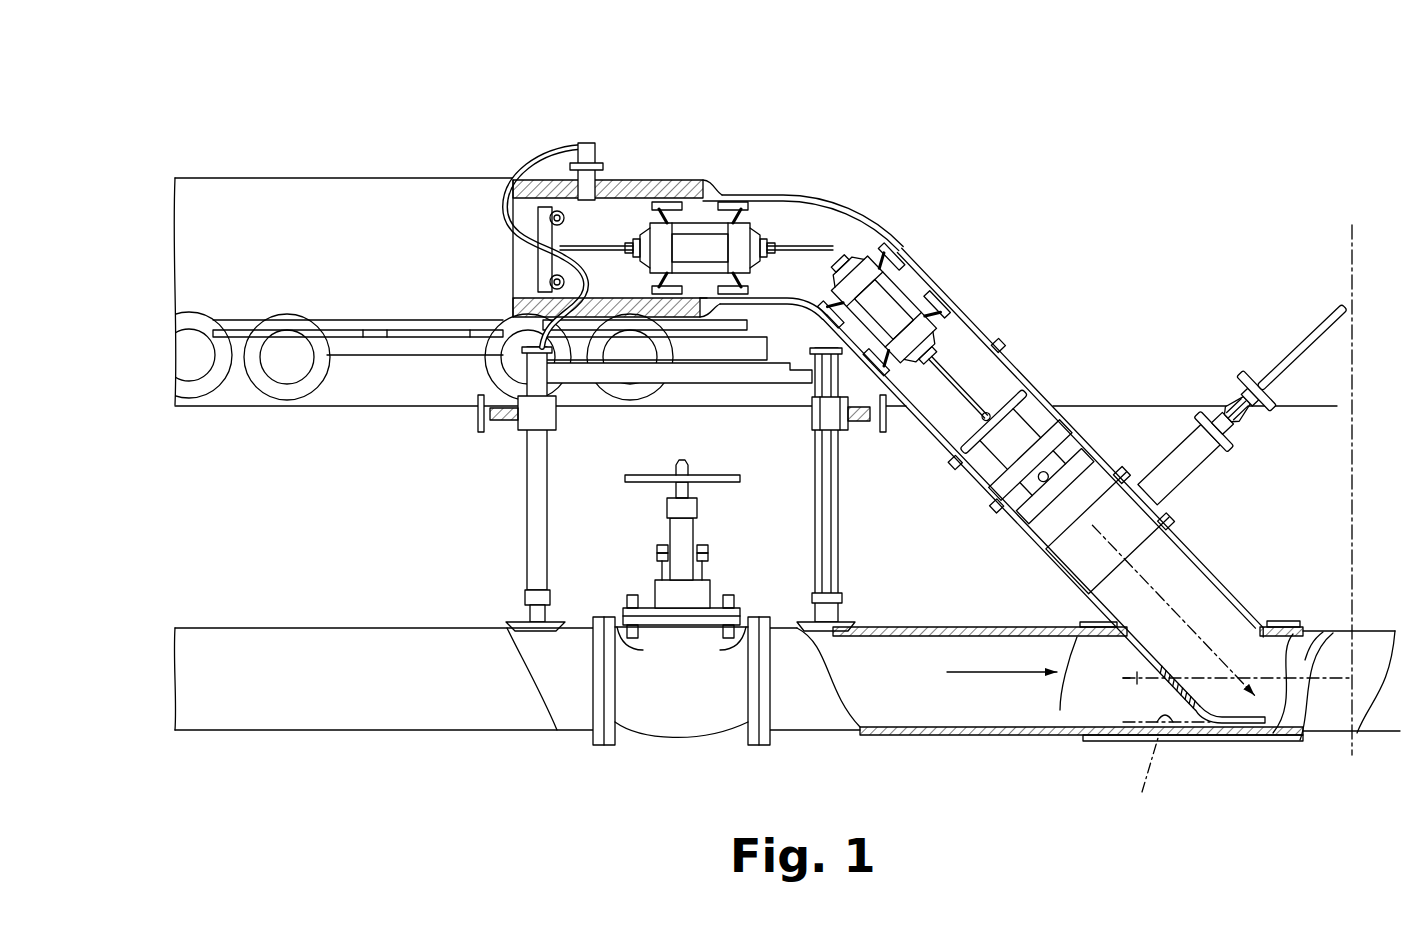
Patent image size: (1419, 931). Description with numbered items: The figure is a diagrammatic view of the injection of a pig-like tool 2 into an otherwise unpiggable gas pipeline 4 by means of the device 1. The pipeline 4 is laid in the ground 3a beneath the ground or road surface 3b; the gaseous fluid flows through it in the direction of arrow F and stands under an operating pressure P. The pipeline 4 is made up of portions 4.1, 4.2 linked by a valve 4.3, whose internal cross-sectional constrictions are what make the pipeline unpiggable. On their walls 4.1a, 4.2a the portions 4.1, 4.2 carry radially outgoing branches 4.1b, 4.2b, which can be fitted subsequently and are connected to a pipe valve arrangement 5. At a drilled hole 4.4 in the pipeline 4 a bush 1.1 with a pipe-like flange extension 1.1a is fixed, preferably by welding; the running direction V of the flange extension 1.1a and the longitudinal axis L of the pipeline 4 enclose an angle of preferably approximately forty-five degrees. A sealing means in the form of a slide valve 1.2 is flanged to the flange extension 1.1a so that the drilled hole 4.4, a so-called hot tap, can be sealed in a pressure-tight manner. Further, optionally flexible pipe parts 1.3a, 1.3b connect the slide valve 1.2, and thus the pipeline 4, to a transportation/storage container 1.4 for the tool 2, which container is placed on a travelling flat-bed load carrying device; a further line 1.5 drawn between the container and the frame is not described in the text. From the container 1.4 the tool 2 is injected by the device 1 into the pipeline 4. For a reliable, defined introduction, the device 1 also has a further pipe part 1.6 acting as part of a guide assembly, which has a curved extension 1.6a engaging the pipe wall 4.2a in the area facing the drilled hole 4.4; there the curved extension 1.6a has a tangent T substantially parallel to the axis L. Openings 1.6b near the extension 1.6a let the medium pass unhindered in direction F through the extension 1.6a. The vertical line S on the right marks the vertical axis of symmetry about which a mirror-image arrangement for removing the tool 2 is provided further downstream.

The device 1 is at (925, 157).
The bush 1.1 is at (1232, 577).
The flange extension 1.1a is at (1180, 535).
The slide valve 1.2 is at (1168, 460).
The pipe part 1.3a is at (1040, 394).
The pipe part 1.3b is at (800, 195).
The transportation/storage container 1.4 is at (476, 160).
The supply hose 1.5 is at (395, 375).
The pipe part 1.6 is at (1245, 730).
The curved extension 1.6a is at (1250, 700).
The openings 1.6b is at (1197, 722).
The tool 2 is at (958, 362).
The ground 3a is at (363, 557).
The ground or road surface 3b is at (313, 410).
The pipeline 4 is at (915, 737).
The portion 4.1 is at (410, 735).
The wall 4.1a is at (573, 665).
The branch 4.1b is at (520, 612).
The portion 4.2 is at (1322, 735).
The wall 4.2a is at (1077, 640).
The branch 4.2b is at (830, 640).
The valve 4.3 is at (690, 740).
The drilled hole 4.4 is at (1227, 633).
The pipe valve arrangement 5 is at (518, 487).
The arrow F is at (1000, 675).
The longitudinal axis L is at (1168, 460).
The operating pressure P is at (884, 682).
The vertical reference plane S is at (1350, 262).
The tangent T is at (1146, 779).
The running direction V is at (1093, 527).